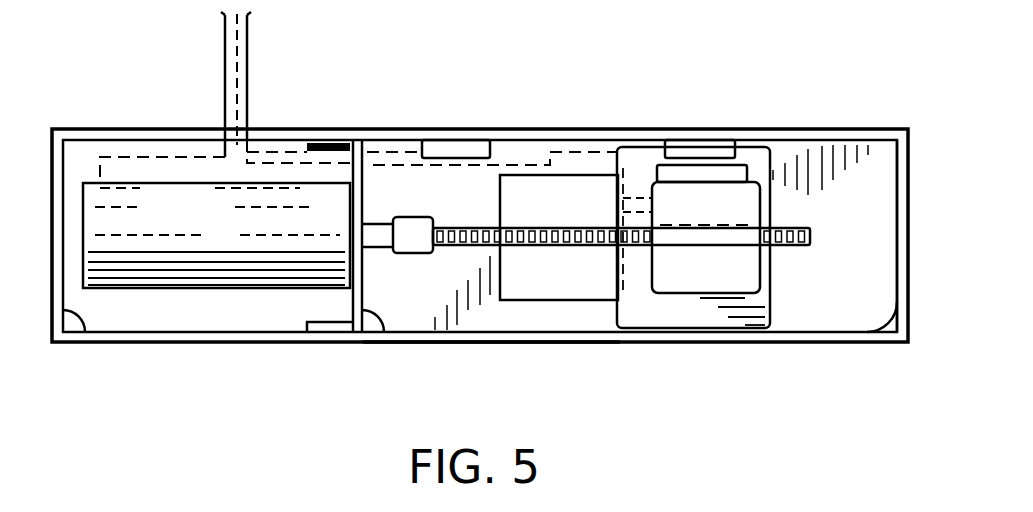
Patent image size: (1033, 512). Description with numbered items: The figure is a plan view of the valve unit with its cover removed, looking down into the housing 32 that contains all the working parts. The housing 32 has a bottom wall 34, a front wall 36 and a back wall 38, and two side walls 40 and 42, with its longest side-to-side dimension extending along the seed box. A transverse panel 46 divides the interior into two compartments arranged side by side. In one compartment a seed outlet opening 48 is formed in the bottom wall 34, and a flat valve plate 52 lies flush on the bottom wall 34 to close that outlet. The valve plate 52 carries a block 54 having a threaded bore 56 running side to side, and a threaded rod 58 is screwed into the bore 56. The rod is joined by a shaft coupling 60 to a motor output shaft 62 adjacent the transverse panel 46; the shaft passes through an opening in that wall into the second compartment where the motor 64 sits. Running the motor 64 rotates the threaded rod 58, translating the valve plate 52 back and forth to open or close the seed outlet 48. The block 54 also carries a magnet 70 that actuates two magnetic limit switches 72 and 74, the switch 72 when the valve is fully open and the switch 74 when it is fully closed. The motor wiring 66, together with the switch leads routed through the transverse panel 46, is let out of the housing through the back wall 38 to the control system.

The housing 32 is at (375, 125).
The bottom wall 34 is at (857, 160).
The front wall 36 is at (562, 128).
The back wall 38 is at (520, 343).
The side wall 40 is at (82, 333).
The side wall 42 is at (876, 336).
The transverse panel 46 is at (378, 338).
The seed outlet opening 48 is at (560, 285).
The valve plate 52 is at (687, 316).
The block 54 is at (742, 275).
The threaded bore 56 is at (703, 240).
The threaded rod 58 is at (583, 230).
The shaft coupling 60 is at (411, 230).
The motor output shaft 62 is at (380, 238).
The motor 64 is at (255, 290).
The wiring 66 is at (222, 75).
The magnet 70 is at (723, 175).
The magnetic limit switch 72 is at (703, 147).
The magnetic limit switch 74 is at (462, 147).